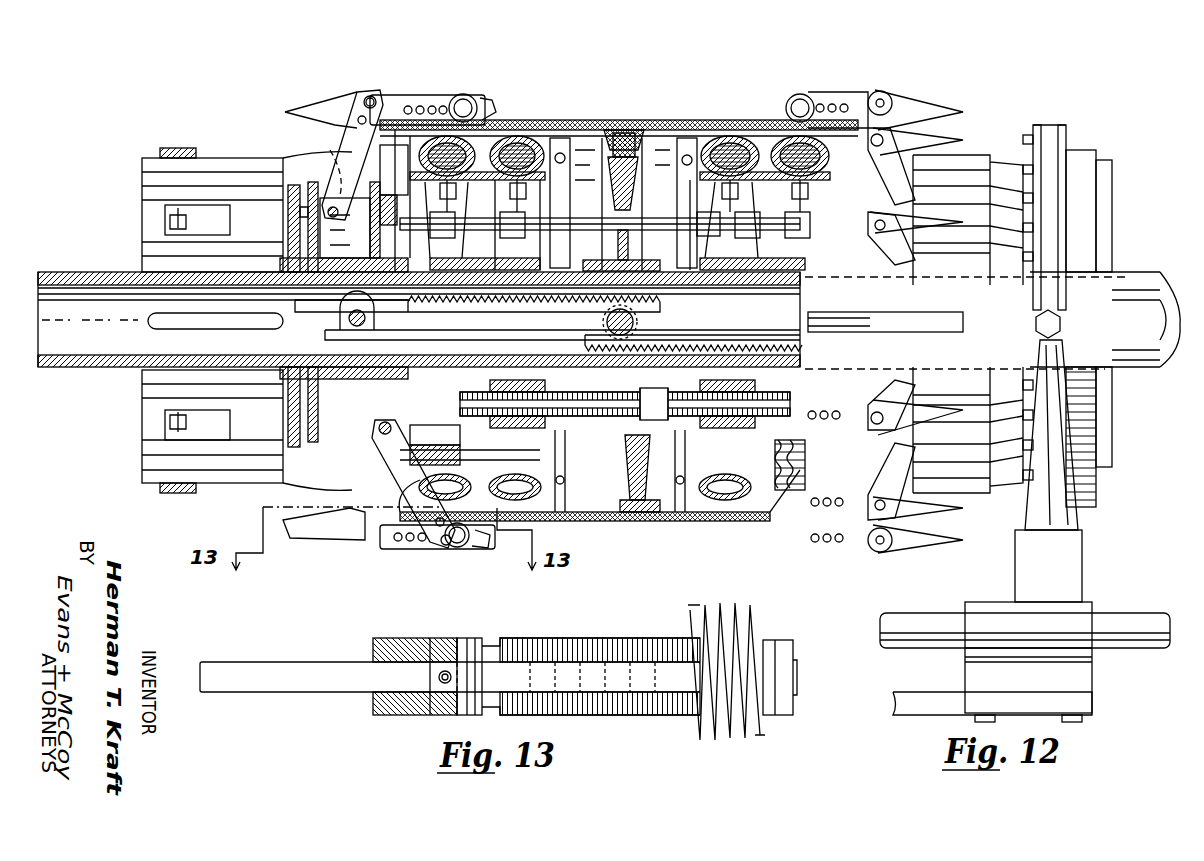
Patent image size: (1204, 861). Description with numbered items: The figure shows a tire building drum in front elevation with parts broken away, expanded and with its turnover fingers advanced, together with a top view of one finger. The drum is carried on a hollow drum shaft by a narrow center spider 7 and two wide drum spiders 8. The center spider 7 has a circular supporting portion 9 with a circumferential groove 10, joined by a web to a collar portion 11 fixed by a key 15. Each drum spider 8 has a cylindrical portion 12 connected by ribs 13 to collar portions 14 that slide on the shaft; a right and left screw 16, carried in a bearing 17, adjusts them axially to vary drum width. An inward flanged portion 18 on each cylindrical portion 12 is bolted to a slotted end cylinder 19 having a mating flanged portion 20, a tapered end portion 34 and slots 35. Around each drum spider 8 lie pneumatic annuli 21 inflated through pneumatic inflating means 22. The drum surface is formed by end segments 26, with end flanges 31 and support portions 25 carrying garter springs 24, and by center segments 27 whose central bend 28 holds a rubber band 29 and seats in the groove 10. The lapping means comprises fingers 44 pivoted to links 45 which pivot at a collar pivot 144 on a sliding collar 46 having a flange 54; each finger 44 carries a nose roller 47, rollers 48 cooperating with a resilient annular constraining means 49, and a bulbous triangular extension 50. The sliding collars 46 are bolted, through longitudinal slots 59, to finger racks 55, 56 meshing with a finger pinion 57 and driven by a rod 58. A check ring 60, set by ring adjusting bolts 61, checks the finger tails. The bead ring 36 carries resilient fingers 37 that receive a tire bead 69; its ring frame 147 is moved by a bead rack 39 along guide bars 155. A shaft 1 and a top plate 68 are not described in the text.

In FIG. 12, the shaft 1 is at (1120, 272).
In FIG. 12, the center spider 7 is at (642, 192).
In FIG. 12, the drum spiders 8 is at (690, 196).
In FIG. 12, the circular supporting portion 9 is at (645, 165).
In FIG. 12, the circumferential groove 10 is at (598, 128).
In FIG. 12, the collar portion 11 is at (644, 262).
In FIG. 12, the cylindrical portion 12 is at (498, 135).
In FIG. 12, the ribs 13 is at (437, 240).
In FIG. 12, the collar portions 14 is at (498, 260).
In FIG. 12, the key 15 is at (478, 268).
In FIG. 12, the right and left screw 16 is at (345, 372).
In FIG. 12, the bearing 17 is at (598, 418).
In FIG. 12, the flanged portion 18 is at (442, 450).
In FIG. 12, the slotted end cylinders 19 is at (142, 180).
In FIG. 12, the flanged portion 20 is at (375, 215).
In FIG. 12, the pneumatic annuli 21 is at (540, 135).
In FIG. 12, the pneumatic inflating means 22 is at (480, 210).
In FIG. 12, the garter springs 24 is at (662, 125).
In FIG. 12, the support portions 25 is at (566, 475).
In FIG. 12, the end segments 26 is at (560, 522).
In FIG. 12, the center segments 27 is at (645, 522).
In FIG. 12, the central bend 28 is at (640, 500).
In FIG. 12, the rubber band 29 is at (632, 522).
In FIG. 12, the end flanges 31 is at (605, 522).
In FIG. 12, the tapered end portion 34 is at (205, 158).
In FIG. 12, the slots 35 is at (238, 160).
In FIG. 12, the bead rings 36 is at (1060, 125).
In FIG. 12, the resilient fingers 37 is at (1028, 145).
In FIG. 12, the bead rack 39 is at (908, 694).
In FIG. 12, the fingers 44 is at (398, 95).
In FIG. 13, the fingers 44 is at (478, 638).
In FIG. 12, the links 45 is at (332, 132).
In FIG. 13, the links 45 is at (390, 638).
In FIG. 12, the sliding collar 46 is at (300, 284).
In FIG. 12, the nose roller 47 is at (482, 98).
In FIG. 13, the nose roller 47 is at (797, 665).
In FIG. 12, the rollers 48 is at (430, 106).
In FIG. 13, the rollers 48 is at (525, 638).
In FIG. 12, the resilient annular constraining means 49 is at (462, 93).
In FIG. 13, the resilient annular constraining means 49 is at (748, 732).
In FIG. 12, the bulbous triangular extension 50 is at (316, 98).
In FIG. 13, the bulbous triangular extension 50 is at (255, 661).
In FIG. 12, the flange 54 is at (318, 462).
In FIG. 12, the finger rack 55 is at (732, 342).
In FIG. 12, the finger rack 56 is at (470, 306).
In FIG. 12, the finger pinion 57 is at (637, 322).
In FIG. 12, the rod 58 is at (1166, 290).
In FIG. 12, the longitudinal slots 59 is at (222, 322).
In FIG. 12, the check ring 60 is at (170, 148).
In FIG. 12, the ring adjusting bolts 61 is at (175, 225).
In FIG. 12, the top plate 68 is at (580, 120).
In FIG. 12, the tire bead 69 is at (388, 98).
In FIG. 12, the collar pivot 144 is at (335, 180).
In FIG. 12, the ring frame 147 is at (1082, 556).
In FIG. 12, the guide bars 155 is at (1142, 628).